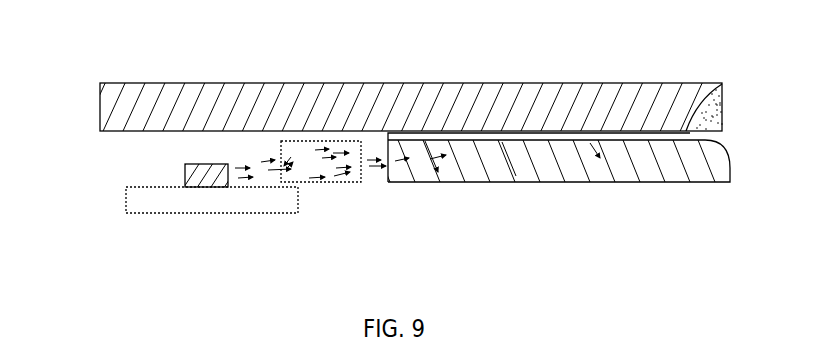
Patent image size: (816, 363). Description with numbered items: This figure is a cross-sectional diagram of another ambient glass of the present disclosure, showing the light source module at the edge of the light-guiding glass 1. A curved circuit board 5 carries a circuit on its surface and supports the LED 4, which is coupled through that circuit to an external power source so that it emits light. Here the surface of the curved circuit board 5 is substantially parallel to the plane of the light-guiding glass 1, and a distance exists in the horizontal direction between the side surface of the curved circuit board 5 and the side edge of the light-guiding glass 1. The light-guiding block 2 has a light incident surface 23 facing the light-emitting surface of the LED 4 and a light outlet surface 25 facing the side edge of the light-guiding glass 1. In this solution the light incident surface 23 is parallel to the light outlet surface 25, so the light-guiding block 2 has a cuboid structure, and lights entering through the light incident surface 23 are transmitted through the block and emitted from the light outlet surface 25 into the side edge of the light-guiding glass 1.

The light-guiding glass 1 is at (482, 180).
The light-guiding block 2 is at (353, 172).
The light incident surface 23 is at (279, 153).
The light outlet surface 25 is at (366, 150).
The LED 4 is at (186, 173).
The curved circuit board 5 is at (193, 203).